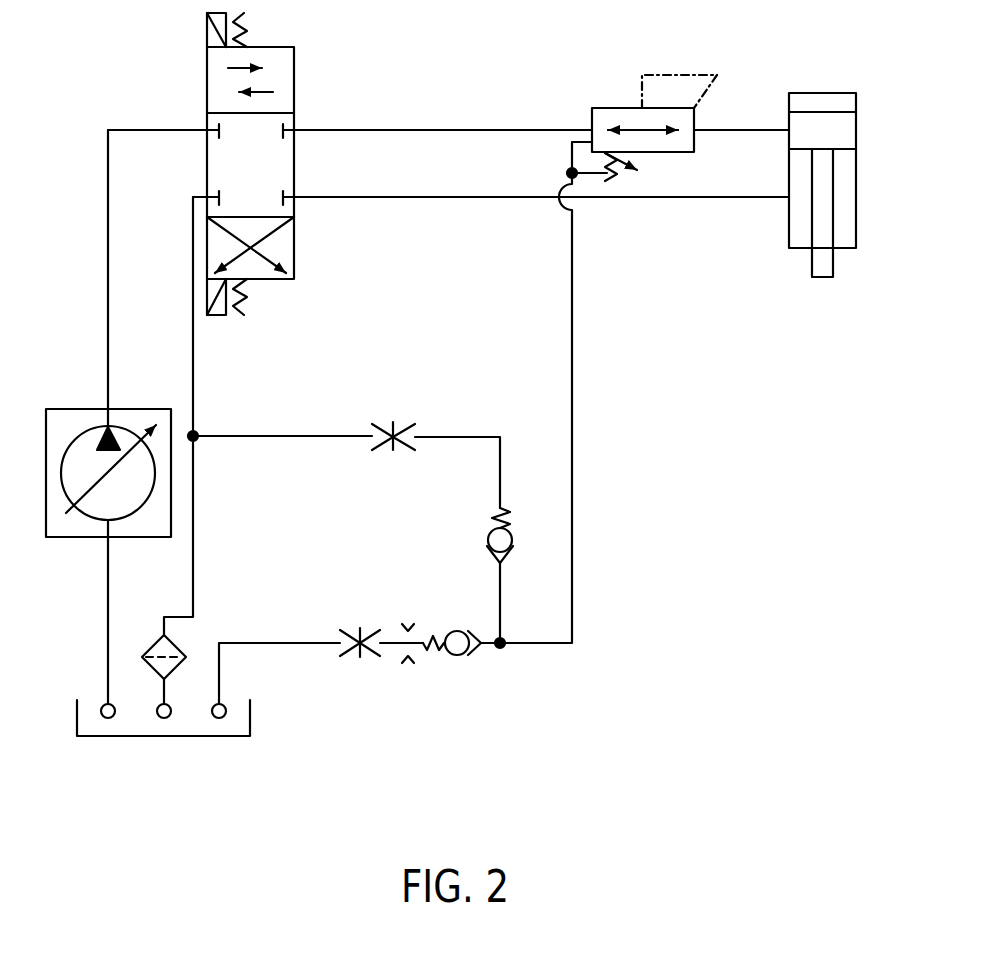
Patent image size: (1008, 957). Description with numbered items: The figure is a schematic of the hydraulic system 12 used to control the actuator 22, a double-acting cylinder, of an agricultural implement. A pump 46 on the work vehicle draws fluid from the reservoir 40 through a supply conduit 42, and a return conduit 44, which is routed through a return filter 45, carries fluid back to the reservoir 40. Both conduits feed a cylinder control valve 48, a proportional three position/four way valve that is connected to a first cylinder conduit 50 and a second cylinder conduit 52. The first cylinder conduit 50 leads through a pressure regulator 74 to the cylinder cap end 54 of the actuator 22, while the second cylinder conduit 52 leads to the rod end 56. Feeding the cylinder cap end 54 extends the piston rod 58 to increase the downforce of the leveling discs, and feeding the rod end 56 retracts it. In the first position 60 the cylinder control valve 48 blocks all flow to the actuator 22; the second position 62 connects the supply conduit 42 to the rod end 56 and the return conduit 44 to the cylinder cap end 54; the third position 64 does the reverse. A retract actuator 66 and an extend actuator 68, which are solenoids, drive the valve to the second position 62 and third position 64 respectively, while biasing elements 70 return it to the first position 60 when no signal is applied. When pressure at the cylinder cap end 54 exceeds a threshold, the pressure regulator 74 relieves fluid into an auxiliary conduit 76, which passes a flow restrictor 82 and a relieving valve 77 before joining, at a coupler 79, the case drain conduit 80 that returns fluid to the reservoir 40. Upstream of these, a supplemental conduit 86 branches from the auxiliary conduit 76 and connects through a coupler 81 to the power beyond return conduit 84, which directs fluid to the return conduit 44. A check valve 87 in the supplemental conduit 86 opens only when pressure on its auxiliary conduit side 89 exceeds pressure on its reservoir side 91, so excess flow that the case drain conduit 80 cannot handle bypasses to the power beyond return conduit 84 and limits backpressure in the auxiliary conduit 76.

The hydraulic system 12 is at (694, 563).
The actuator 22 is at (811, 163).
The reservoir 40 is at (77, 718).
The supply conduit 42 is at (108, 608).
The return conduit 44 is at (193, 575).
The return filter 45 is at (185, 633).
The pump 46 is at (77, 409).
The cylinder control valve 48 is at (230, 162).
The first cylinder conduit 50 is at (440, 130).
The second cylinder conduit 52 is at (425, 197).
The cylinder cap end 54 is at (826, 83).
The rod end 56 is at (851, 256).
The piston rod 58 is at (812, 262).
The first position 60 is at (197, 161).
The second position 62 is at (294, 246).
The third position 64 is at (294, 78).
The retract actuator 66 is at (207, 298).
The extend actuator 68 is at (207, 33).
The biasing elements 70 is at (246, 24).
The pressure regulator 74 is at (625, 108).
The auxiliary conduit 76 is at (572, 426).
The relieving valve 77 is at (479, 661).
The coupler 79 is at (348, 620).
The case drain conduit 80 is at (282, 643).
The coupler 81 is at (398, 411).
The flow restrictor 82 is at (395, 663).
The power beyond return conduit 84 is at (305, 436).
The supplemental conduit 86 is at (500, 470).
The check valve 87 is at (488, 545).
The auxiliary conduit side 89 is at (500, 600).
The reservoir side 91 is at (510, 520).